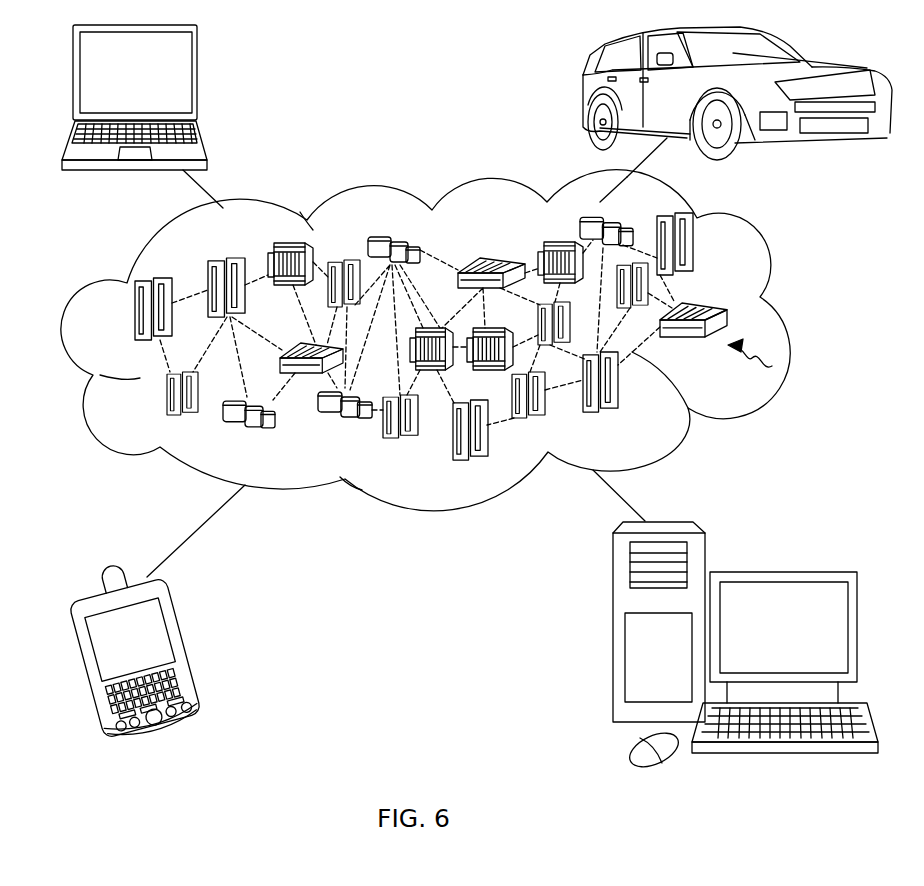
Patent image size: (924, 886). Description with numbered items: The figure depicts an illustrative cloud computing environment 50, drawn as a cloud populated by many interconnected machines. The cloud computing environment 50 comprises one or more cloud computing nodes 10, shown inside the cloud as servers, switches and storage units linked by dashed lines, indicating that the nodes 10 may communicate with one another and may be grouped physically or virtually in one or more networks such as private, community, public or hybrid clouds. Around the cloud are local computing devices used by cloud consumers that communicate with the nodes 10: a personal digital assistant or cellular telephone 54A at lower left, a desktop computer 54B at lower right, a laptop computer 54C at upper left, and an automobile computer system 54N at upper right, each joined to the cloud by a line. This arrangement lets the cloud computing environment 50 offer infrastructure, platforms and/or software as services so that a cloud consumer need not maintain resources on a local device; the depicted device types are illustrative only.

The cloud computing node 10 is at (777, 367).
The cloud computing environment 50 is at (785, 318).
The personal digital assistant or cellular telephone 54A is at (188, 655).
The desktop computer 54B is at (782, 570).
The laptop computer 54C is at (197, 79).
The automobile computer system 54N is at (590, 91).